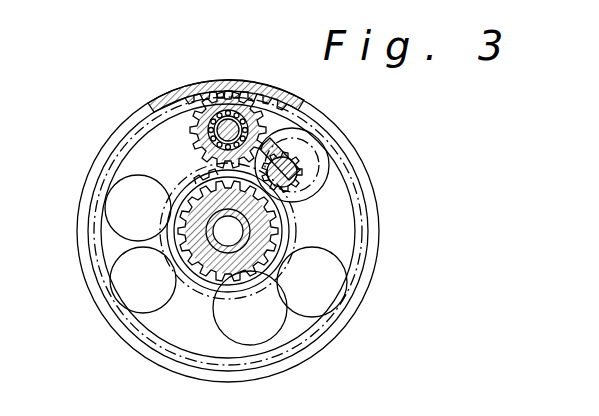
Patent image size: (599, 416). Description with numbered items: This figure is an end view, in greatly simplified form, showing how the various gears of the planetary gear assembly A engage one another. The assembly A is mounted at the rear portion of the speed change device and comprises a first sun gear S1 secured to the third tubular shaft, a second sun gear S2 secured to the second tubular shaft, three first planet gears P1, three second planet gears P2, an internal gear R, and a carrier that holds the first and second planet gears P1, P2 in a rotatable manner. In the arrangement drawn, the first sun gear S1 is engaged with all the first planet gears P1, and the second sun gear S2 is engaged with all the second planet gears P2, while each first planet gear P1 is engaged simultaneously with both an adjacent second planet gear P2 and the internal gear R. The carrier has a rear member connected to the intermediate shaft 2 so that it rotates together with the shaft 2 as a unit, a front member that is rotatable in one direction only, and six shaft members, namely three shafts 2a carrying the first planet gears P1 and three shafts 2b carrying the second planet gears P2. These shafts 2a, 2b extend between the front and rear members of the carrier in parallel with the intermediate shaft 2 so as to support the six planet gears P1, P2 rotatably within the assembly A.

The planetary gear assembly A is at (276, 78).
The internal gear R is at (232, 90).
The intermediate shaft 2 is at (224, 236).
The shafts of the first planet gears 2a is at (256, 122).
The shafts of the second planet gears 2b is at (298, 160).
The first sun gear S1 is at (200, 172).
The second sun gear S2 is at (183, 218).
The first planet gears P1 is at (200, 108).
The second planet gears P2 is at (308, 178).